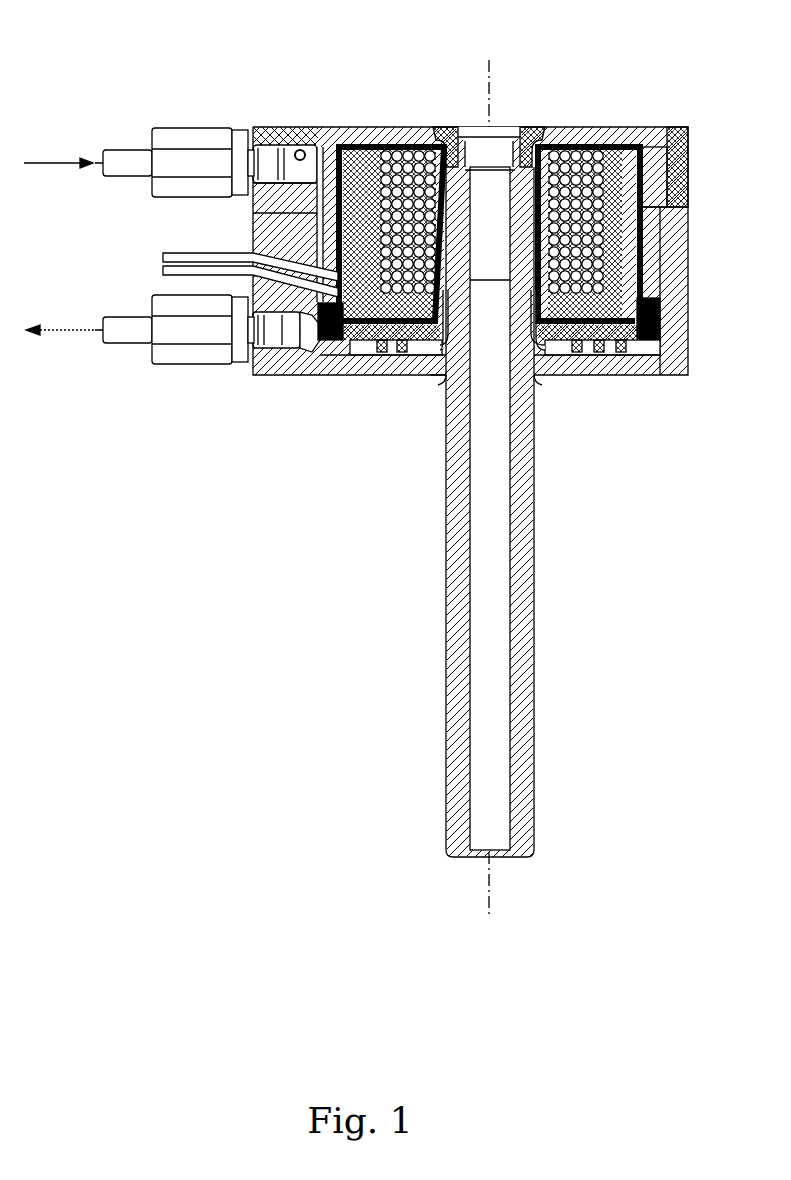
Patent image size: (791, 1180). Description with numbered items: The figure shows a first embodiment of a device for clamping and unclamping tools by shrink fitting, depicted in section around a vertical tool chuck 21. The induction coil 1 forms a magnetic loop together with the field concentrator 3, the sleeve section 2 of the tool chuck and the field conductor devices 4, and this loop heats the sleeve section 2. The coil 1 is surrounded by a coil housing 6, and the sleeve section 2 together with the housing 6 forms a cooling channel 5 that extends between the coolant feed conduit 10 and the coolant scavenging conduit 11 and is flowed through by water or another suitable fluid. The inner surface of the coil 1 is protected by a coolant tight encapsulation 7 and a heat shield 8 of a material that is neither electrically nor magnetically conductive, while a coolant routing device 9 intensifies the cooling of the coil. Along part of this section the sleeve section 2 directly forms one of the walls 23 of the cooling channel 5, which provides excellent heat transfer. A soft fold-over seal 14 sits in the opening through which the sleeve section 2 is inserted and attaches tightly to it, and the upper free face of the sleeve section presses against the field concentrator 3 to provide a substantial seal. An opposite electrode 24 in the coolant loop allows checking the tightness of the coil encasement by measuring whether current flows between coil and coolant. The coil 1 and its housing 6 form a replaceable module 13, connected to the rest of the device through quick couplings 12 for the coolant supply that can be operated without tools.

The induction coil 1 is at (577, 127).
The sleeve section of the tool chuck 2 is at (543, 376).
The field concentrator 3 is at (530, 127).
The field conductor devices 4 is at (647, 231).
The cooling channel 5 is at (428, 376).
The coil housing 6 is at (305, 110).
The coolant tight encapsulation 7 is at (356, 376).
The heat shield 8 is at (388, 376).
The coolant routing device 9 is at (597, 376).
The coolant feed conduit 10 is at (197, 127).
The coolant scavenging conduit 11 is at (203, 355).
The quick couplings 12 is at (138, 190).
The replaceable module 13 is at (400, 85).
The fold-over seal 14 is at (447, 386).
The tool chuck 21 is at (550, 570).
The wall of the cooling channel 23 is at (457, 250).
The opposite electrode 24 is at (298, 150).